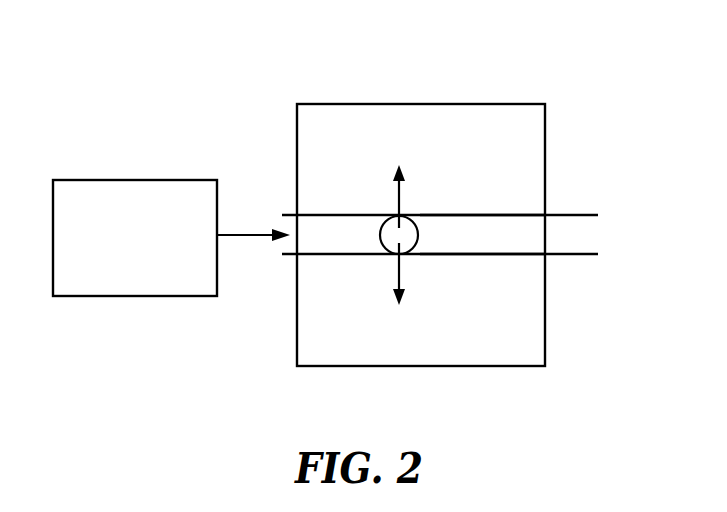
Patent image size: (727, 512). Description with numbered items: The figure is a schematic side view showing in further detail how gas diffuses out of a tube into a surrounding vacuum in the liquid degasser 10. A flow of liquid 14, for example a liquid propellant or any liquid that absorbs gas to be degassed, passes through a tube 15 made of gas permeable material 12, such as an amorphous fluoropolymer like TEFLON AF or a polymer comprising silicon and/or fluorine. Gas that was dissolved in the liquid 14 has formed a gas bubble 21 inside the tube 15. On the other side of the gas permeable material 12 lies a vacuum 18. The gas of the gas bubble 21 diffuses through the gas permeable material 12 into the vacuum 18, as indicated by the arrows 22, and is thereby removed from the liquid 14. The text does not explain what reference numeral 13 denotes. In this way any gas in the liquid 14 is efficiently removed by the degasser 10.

The liquid degasser 10 is at (358, 80).
The gas permeable material 12 is at (590, 215).
The propellant flow direction 13 is at (504, 196).
The flow of liquid 14 is at (105, 180).
The tube 15 is at (466, 256).
The vacuum 18 is at (518, 136).
The gas bubble 21 is at (416, 231).
The arrows 22 is at (397, 195).